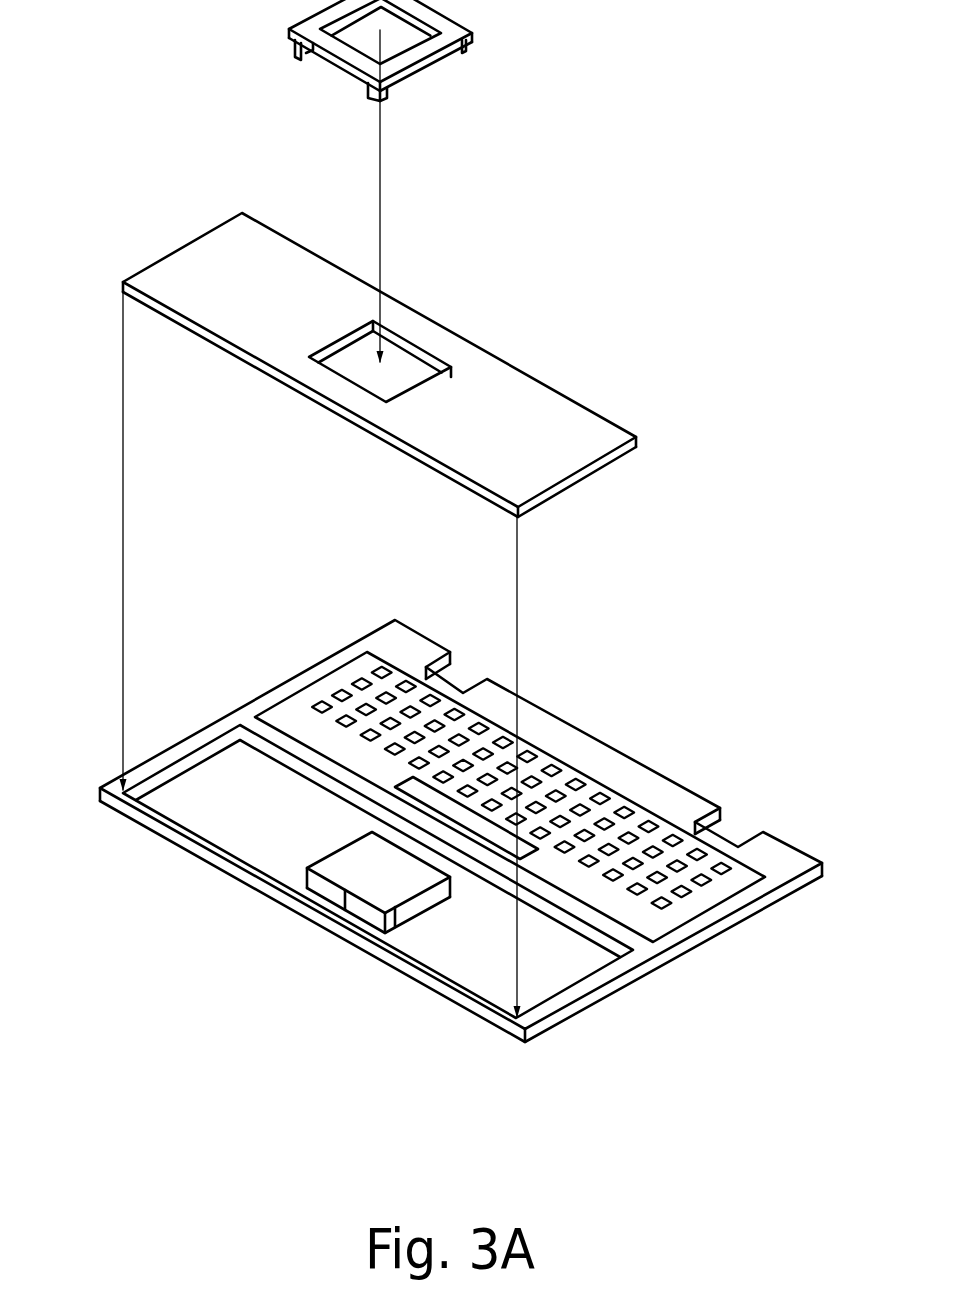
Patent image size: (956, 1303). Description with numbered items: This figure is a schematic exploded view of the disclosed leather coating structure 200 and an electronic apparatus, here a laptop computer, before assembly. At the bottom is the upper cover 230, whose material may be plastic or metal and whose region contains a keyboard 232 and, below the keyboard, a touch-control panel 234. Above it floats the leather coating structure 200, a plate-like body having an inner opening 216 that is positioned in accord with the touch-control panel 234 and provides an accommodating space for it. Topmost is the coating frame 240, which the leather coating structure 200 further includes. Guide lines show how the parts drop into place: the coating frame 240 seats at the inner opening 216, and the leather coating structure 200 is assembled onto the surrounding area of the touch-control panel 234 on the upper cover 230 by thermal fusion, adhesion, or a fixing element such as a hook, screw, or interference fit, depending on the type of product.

The leather coating structure 200 is at (290, 227).
The inner opening 216 is at (397, 370).
The upper cover 230 is at (650, 948).
The keyboard 232 is at (726, 892).
The touch-control panel 234 is at (418, 905).
The coating frame 240 is at (437, 50).